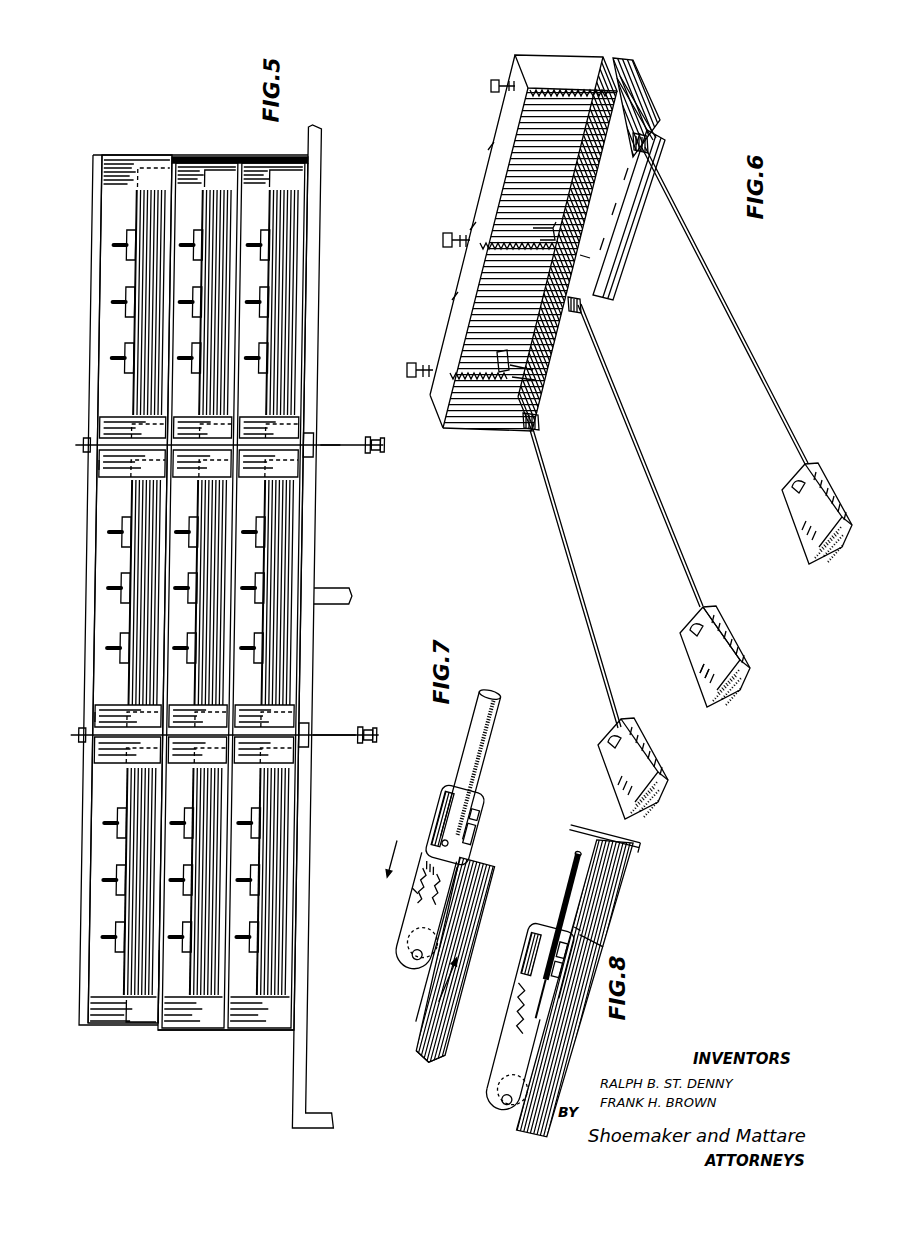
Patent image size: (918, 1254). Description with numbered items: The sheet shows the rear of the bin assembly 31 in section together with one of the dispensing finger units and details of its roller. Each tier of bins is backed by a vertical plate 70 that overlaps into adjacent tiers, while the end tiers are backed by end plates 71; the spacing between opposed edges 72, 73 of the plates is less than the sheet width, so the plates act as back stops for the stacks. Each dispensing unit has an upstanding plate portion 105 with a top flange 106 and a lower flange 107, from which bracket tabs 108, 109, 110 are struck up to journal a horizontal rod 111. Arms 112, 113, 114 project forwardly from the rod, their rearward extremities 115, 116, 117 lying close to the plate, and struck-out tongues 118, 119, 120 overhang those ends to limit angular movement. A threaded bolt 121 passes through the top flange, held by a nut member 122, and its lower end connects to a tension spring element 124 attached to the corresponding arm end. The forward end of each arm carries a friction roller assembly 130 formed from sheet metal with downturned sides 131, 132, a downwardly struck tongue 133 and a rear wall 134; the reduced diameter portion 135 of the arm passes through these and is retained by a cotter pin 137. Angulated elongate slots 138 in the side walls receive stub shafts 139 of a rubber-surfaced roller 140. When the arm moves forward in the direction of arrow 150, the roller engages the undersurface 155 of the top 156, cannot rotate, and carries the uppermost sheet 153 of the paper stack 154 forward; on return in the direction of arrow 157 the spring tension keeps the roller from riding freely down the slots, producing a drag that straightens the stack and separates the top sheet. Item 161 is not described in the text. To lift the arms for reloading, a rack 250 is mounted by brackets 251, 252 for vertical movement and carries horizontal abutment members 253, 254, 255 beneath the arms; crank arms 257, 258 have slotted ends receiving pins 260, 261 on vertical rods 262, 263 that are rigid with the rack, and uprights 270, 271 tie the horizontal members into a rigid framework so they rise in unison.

In FIG. 5, the bin assembly 31 is at (170, 143).
In FIG. 5, the vertical plate 70 is at (117, 425).
In FIG. 5, the end plate 71 is at (118, 177).
In FIG. 5, the plate edge 72 is at (124, 705).
In FIG. 5, the plate edge 73 is at (115, 478).
In FIG. 6, the upstanding plate portion 105 is at (562, 58).
In FIG. 6, the top flange 106 is at (500, 135).
In FIG. 6, the lower flange 107 is at (653, 103).
In FIG. 6, the bracket tab 108 is at (523, 418).
In FIG. 6, the bracket tab 109 is at (569, 304).
In FIG. 6, the bracket tab 110 is at (633, 141).
In FIG. 6, the horizontal rod 111 is at (617, 207).
In FIG. 5, the arm 112 is at (115, 823).
In FIG. 6, the arm 112 is at (553, 497).
In FIG. 5, the arm 113 is at (115, 880).
In FIG. 6, the arm 113 is at (633, 432).
In FIG. 7, the arm 113 is at (485, 769).
In FIG. 8, the arm 113 is at (542, 931).
In FIG. 5, the arm 114 is at (115, 937).
In FIG. 6, the arm 114 is at (694, 305).
In FIG. 6, the rearward extremity 115 is at (515, 375).
In FIG. 6, the rearward extremity 116 is at (563, 248).
In FIG. 6, the rearward extremity 117 is at (621, 78).
In FIG. 6, the tongue 118 is at (500, 357).
In FIG. 6, the tongue 119 is at (546, 233).
In FIG. 6, the tongue 120 is at (598, 76).
In FIG. 6, the threaded bolt 121 is at (443, 238).
In FIG. 6, the nut member 122 is at (467, 233).
In FIG. 6, the tension spring element 124 is at (520, 247).
In FIG. 6, the friction roller assembly 130 is at (670, 637).
In FIG. 7, the friction roller assembly 130 is at (438, 804).
In FIG. 8, the friction roller assembly 130 is at (518, 980).
In FIG. 7, the side wall 131 is at (464, 965).
In FIG. 6, the side wall 132 is at (725, 640).
In FIG. 7, the side wall 132 is at (468, 953).
In FIG. 7, the tongue 133 is at (421, 813).
In FIG. 7, the rear wall 134 is at (491, 794).
In FIG. 7, the reduced diameter portion 135 is at (494, 822).
In FIG. 7, the cotter pin 137 is at (420, 835).
In FIG. 7, the elongate slot 138 is at (418, 936).
In FIG. 8, the elongate slot 138 is at (502, 1044).
In FIG. 7, the stub shaft 139 is at (401, 939).
In FIG. 8, the stub shaft 139 is at (490, 1082).
In FIG. 6, the roller 140 is at (740, 707).
In FIG. 7, the roller 140 is at (390, 965).
In FIG. 8, the roller 140 is at (486, 1115).
In FIG. 7, the arrow 150 is at (386, 854).
In FIG. 7, the uppermost sheet 153 is at (412, 1042).
In FIG. 7, the paper stack 154 is at (435, 1101).
In FIG. 8, the paper stack 154 is at (564, 996).
In FIG. 7, the undersurface 155 is at (397, 900).
In FIG. 6, the top 156 is at (703, 670).
In FIG. 7, the top 156 is at (412, 871).
In FIG. 7, the arrow 157 is at (465, 991).
In FIG. 7, the spring 161 is at (434, 889).
In FIG. 5, the rack 250 is at (168, 795).
In FIG. 5, the bracket 251 is at (90, 445).
In FIG. 5, the bracket 252 is at (322, 455).
In FIG. 5, the horizontal abutment member 253 is at (173, 988).
In FIG. 5, the horizontal abutment member 254 is at (238, 796).
In FIG. 5, the horizontal abutment member 255 is at (308, 812).
In FIG. 5, the crank arm 257 is at (372, 736).
In FIG. 5, the crank arm 258 is at (375, 442).
In FIG. 5, the pin 260 is at (384, 732).
In FIG. 5, the pin 261 is at (385, 440).
In FIG. 5, the vertical rod 262 is at (370, 742).
In FIG. 5, the vertical rod 263 is at (342, 445).
In FIG. 5, the upright 270 is at (222, 1030).
In FIG. 5, the upright 271 is at (228, 157).